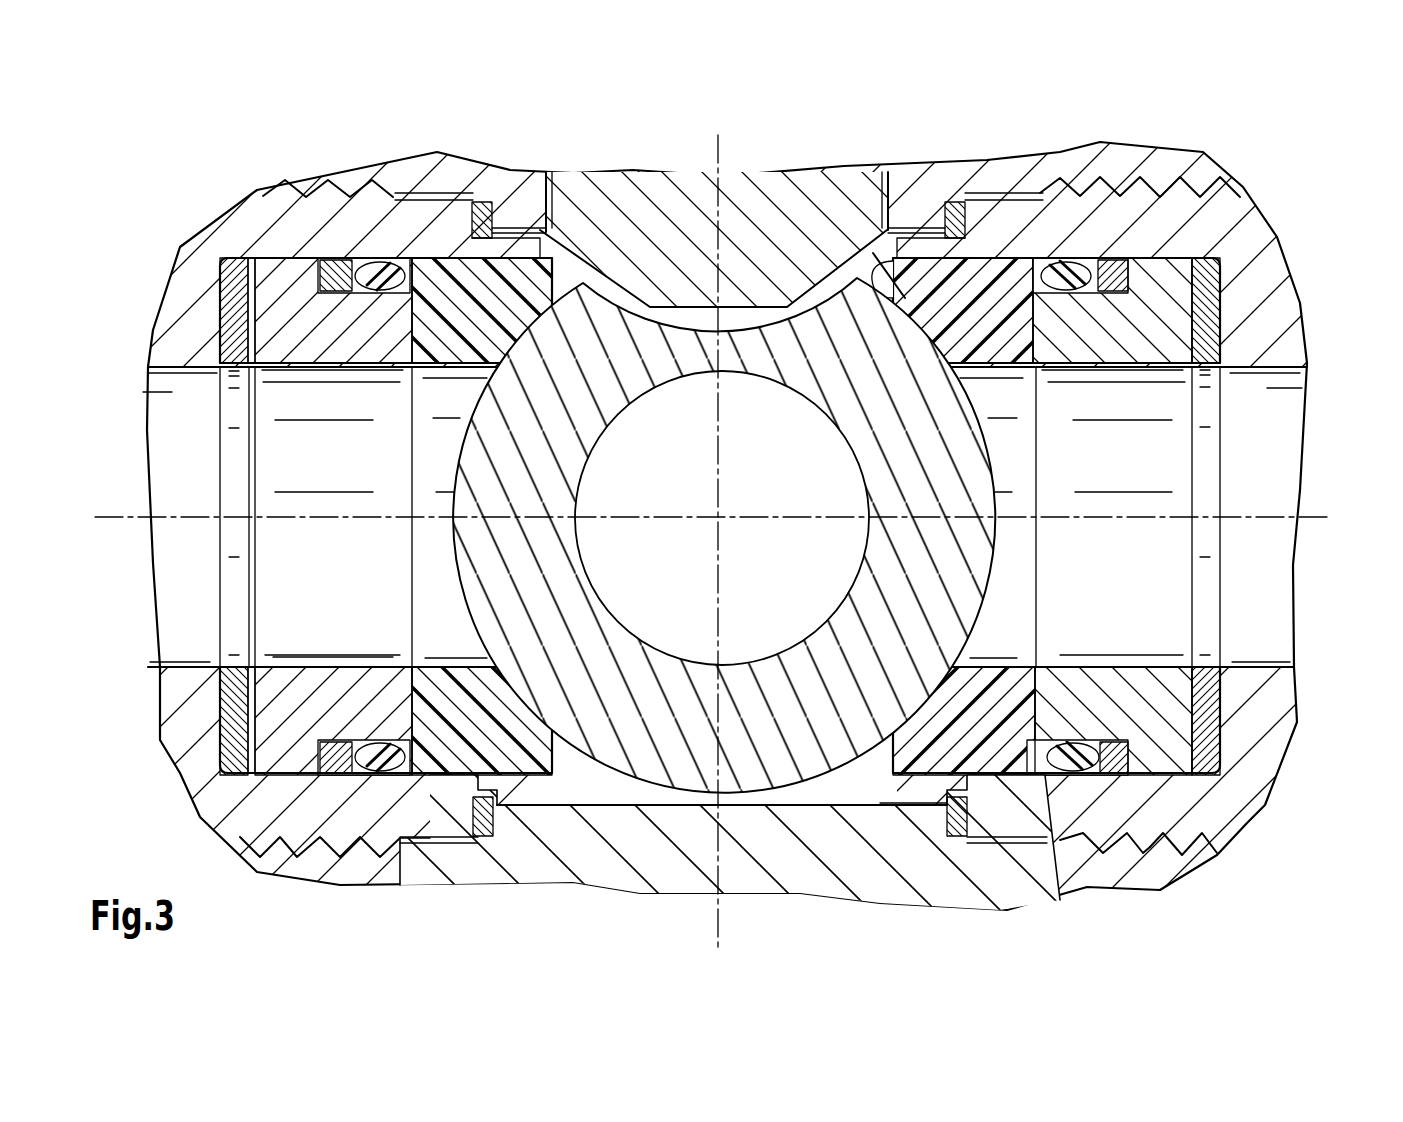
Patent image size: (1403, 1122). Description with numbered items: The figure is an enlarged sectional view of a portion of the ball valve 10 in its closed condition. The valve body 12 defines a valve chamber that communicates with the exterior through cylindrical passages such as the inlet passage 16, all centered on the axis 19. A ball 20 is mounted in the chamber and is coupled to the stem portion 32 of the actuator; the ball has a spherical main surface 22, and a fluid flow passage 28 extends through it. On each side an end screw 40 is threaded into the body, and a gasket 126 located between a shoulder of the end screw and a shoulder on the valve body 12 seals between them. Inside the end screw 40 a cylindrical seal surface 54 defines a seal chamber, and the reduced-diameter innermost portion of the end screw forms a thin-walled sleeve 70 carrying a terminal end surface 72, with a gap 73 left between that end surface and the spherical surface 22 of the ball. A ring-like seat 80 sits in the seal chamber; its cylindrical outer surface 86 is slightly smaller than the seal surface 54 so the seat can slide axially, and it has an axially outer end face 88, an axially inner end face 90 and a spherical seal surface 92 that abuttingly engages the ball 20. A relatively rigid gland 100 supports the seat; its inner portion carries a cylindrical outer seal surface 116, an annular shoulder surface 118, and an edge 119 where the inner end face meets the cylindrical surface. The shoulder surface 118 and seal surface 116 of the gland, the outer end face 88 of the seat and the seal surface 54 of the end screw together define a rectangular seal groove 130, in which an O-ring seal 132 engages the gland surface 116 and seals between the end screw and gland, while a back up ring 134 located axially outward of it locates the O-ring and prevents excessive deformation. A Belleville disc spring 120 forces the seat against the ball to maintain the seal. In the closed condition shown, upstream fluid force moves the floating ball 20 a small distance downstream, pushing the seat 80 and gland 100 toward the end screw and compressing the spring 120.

The ball valve 10 is at (352, 917).
The valve body 12 is at (1165, 140).
The inlet passage 16 is at (163, 474).
The axis 19 is at (718, 143).
The ball 20 is at (724, 535).
The spherical main surface 22 is at (647, 785).
The fluid flow passage 28 is at (645, 474).
The stem portion 32 is at (750, 190).
The end screw 40 is at (1252, 825).
The seal surface 54 is at (417, 247).
The sleeve 70 is at (933, 785).
The terminal end surface 72 is at (905, 800).
The gap 73 is at (890, 262).
The seat 80 is at (447, 290).
The outer surface 86 is at (980, 252).
The outer end face 88 is at (1047, 255).
The inner end face 90 is at (862, 783).
The seal surface 92 is at (883, 280).
The gland 100 is at (786, 529).
The outer seal surface 116 is at (1087, 255).
The shoulder surface 118 is at (1120, 258).
The edge 119 is at (983, 732).
The spring 120 is at (228, 267).
The gasket 126 is at (432, 262).
The seal groove 130 is at (400, 760).
The seal 132 is at (370, 273).
The back up ring 134 is at (333, 270).